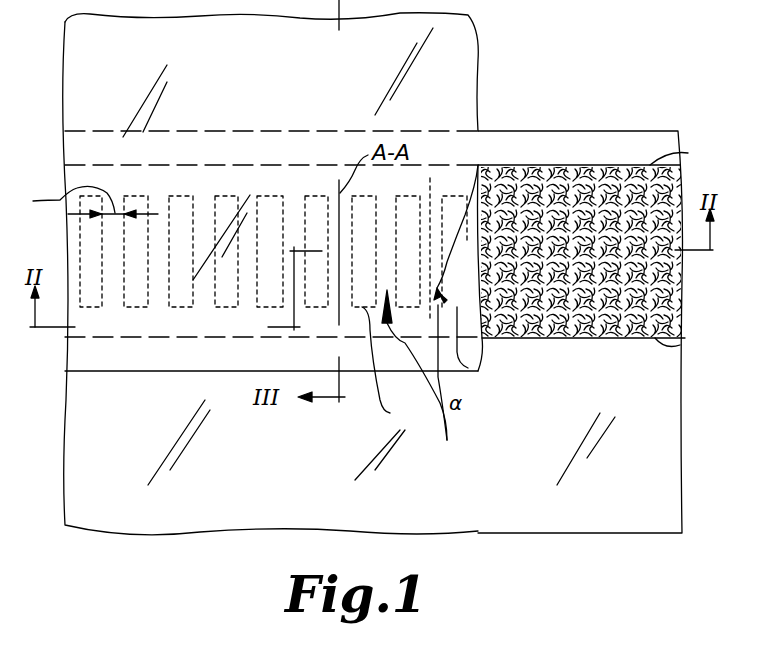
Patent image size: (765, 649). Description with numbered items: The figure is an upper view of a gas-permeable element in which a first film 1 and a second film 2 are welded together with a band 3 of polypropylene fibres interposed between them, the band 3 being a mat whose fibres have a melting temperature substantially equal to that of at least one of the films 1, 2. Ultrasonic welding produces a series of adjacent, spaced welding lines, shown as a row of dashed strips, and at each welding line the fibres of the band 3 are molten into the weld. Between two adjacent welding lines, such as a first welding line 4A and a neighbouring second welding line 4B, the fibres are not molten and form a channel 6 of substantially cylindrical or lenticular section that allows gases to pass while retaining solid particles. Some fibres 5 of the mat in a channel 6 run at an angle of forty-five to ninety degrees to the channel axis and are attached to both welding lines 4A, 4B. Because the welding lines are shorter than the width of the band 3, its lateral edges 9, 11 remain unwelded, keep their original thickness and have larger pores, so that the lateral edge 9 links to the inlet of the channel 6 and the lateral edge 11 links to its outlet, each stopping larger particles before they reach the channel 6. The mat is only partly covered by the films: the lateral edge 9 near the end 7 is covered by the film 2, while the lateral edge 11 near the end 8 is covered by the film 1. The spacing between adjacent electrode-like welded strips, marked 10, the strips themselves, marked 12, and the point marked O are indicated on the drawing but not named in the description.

The first layer or film 1 is at (604, 143).
The second layer or film 2 is at (478, 48).
The band of fibres 3 is at (672, 290).
The first welding line 4A is at (468, 368).
The second welding line 4B is at (391, 368).
The fibres 5 is at (478, 172).
The channel 6 is at (417, 379).
The end 7 is at (688, 153).
The end 8 is at (680, 345).
The lateral edge 9 is at (72, 176).
The gap between electrodes 10 is at (117, 197).
The lateral edge 11 is at (73, 330).
The electrodes 12 is at (113, 303).
The origin O is at (65, 201).